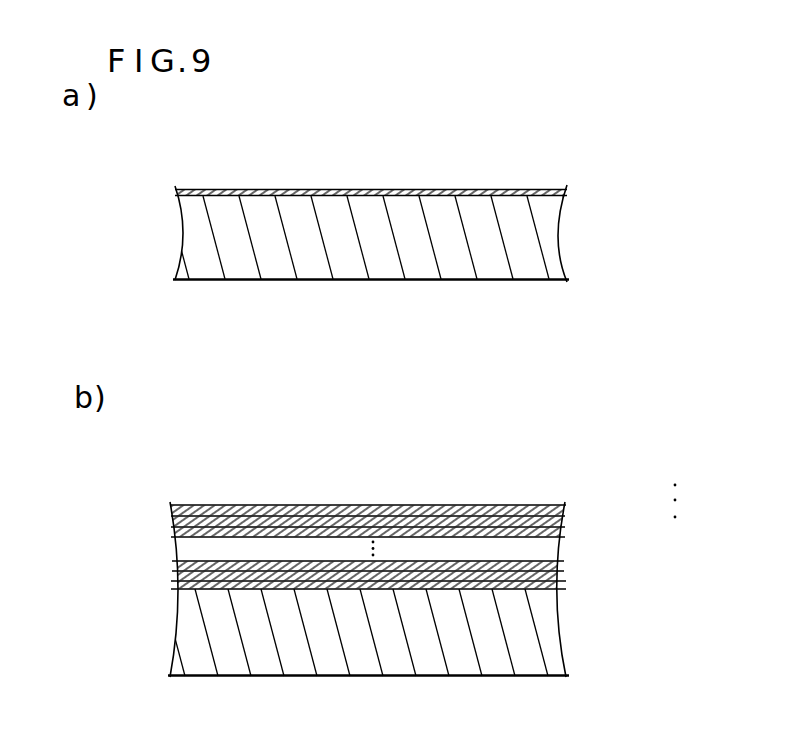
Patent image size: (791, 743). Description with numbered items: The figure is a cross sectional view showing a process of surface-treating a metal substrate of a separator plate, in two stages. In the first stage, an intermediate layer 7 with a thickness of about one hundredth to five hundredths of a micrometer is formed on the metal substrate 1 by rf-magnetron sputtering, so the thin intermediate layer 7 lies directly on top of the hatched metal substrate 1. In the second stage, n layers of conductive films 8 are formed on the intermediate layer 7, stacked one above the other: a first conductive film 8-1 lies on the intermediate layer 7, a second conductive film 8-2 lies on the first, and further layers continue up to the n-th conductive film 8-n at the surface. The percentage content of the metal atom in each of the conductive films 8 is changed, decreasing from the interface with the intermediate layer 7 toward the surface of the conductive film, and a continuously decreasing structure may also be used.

The metal substrate 1 is at (548, 253).
The intermediate layer 7 is at (546, 196).
The conductive films 8 is at (150, 505).
The n-th conductive film 8-n is at (561, 504).
The second conductive film 8-2 is at (563, 567).
The first conductive film 8-1 is at (565, 583).